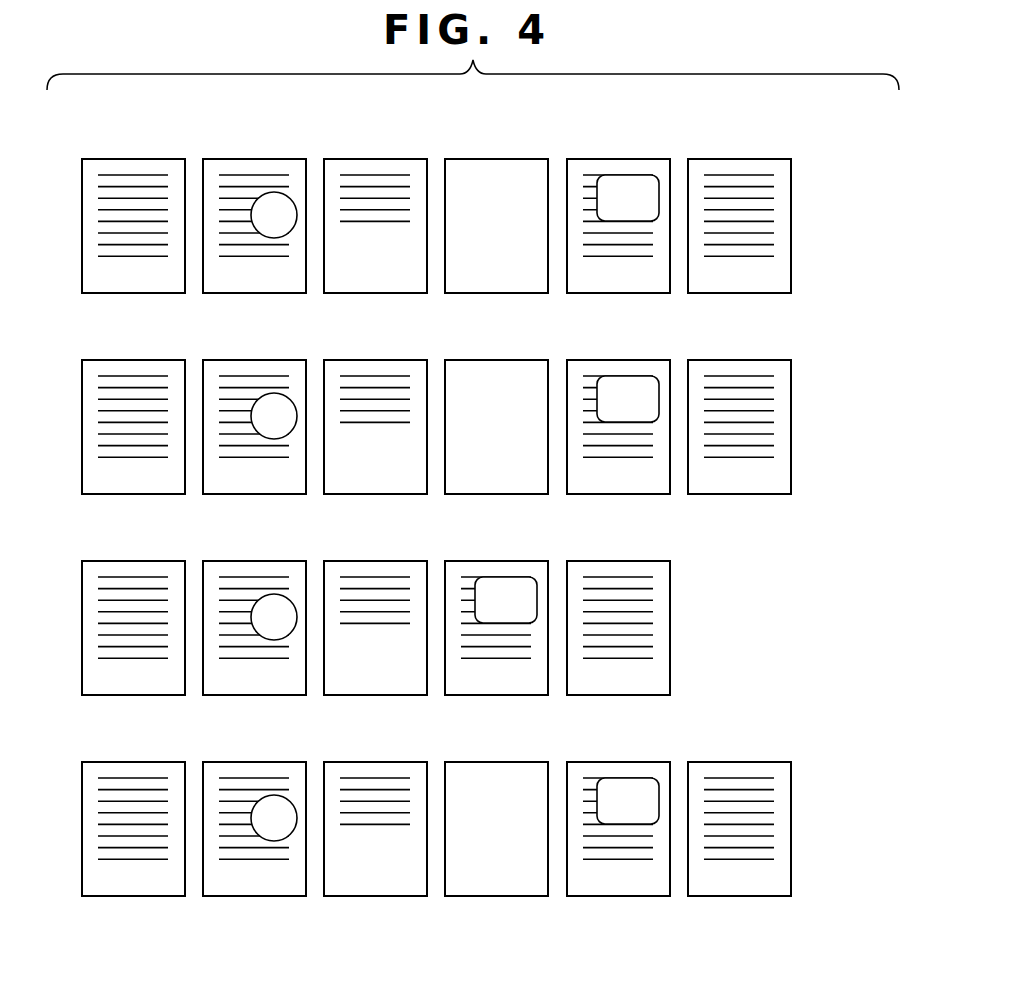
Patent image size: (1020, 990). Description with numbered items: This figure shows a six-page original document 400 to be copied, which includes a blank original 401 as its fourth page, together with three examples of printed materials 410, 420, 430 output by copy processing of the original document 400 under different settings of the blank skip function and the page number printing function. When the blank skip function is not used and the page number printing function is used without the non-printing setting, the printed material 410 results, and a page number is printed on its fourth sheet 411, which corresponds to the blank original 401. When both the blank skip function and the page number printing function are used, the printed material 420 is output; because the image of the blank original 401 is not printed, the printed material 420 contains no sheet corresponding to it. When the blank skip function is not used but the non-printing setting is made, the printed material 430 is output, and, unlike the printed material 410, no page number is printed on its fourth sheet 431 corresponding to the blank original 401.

The six-page original document 400 is at (485, 204).
The blank original 401 is at (497, 159).
The printed material 410 is at (485, 405).
The fourth sheet 411 is at (497, 360).
The printed material 420 is at (485, 628).
The printed material 430 is at (485, 807).
The fourth sheet 431 is at (497, 762).